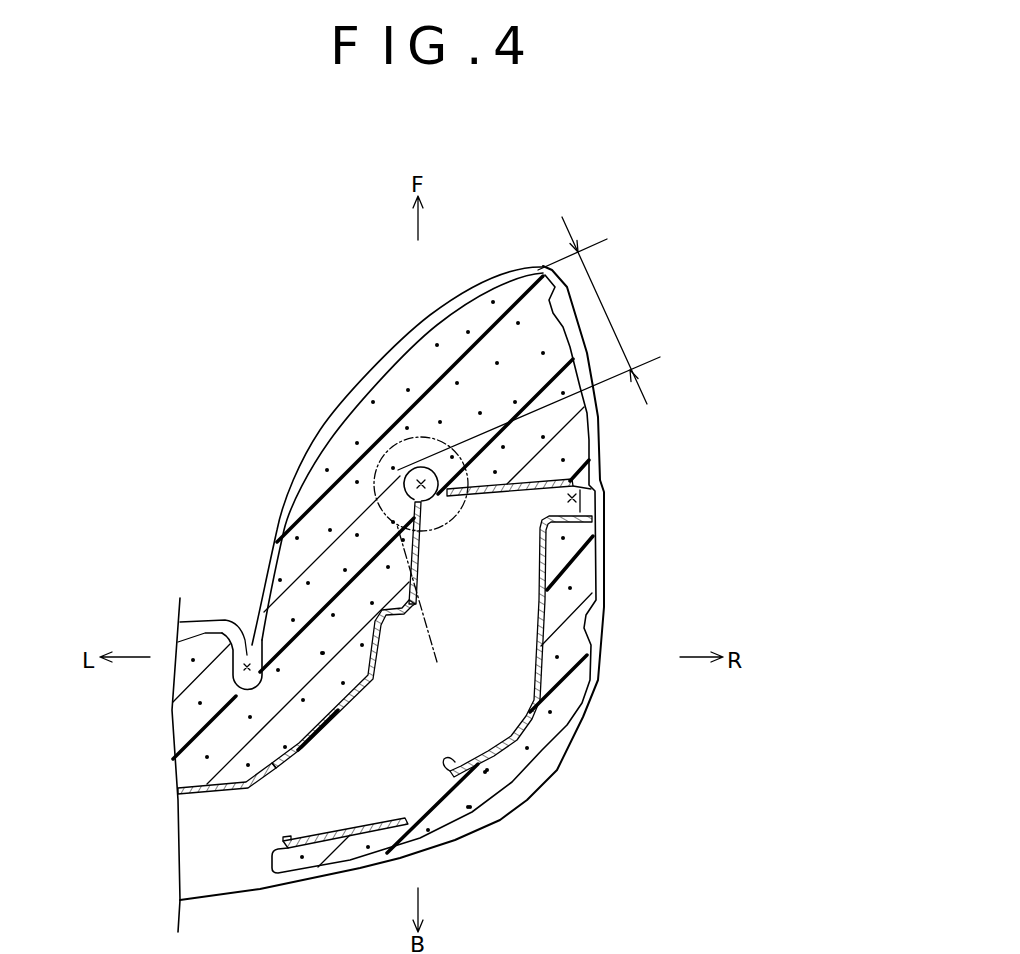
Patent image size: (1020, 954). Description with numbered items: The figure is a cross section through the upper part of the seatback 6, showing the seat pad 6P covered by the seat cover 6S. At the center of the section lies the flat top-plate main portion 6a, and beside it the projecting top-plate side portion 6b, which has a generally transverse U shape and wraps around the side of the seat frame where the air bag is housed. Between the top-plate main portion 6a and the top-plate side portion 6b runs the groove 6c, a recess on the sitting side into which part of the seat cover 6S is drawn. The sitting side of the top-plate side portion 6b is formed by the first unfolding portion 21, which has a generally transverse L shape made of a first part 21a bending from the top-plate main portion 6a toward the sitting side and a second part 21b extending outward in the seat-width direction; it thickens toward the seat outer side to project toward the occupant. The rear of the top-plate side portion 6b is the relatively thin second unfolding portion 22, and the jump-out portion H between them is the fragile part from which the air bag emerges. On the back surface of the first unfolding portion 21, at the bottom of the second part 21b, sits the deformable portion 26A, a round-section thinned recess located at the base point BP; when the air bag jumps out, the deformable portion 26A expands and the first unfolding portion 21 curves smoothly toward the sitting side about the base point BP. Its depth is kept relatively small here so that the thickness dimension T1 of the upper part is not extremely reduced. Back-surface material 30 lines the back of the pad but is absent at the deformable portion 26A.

The seatback 6 is at (478, 247).
The seat cover 6S is at (392, 341).
The seat pad 6P is at (440, 574).
The first unfolding portion 21 is at (323, 530).
The first part 21a is at (273, 527).
The second part 21b is at (342, 494).
The top-plate main portion 6a is at (205, 650).
The top-plate side portion 6b is at (548, 574).
The groove 6c is at (247, 662).
The second unfolding portion 22 is at (575, 537).
The hole H is at (577, 498).
The deformable portion 26A is at (426, 498).
The back-surface material 30 is at (370, 678).
The base point BP is at (424, 610).
The thickness dimension T1 is at (529, 343).